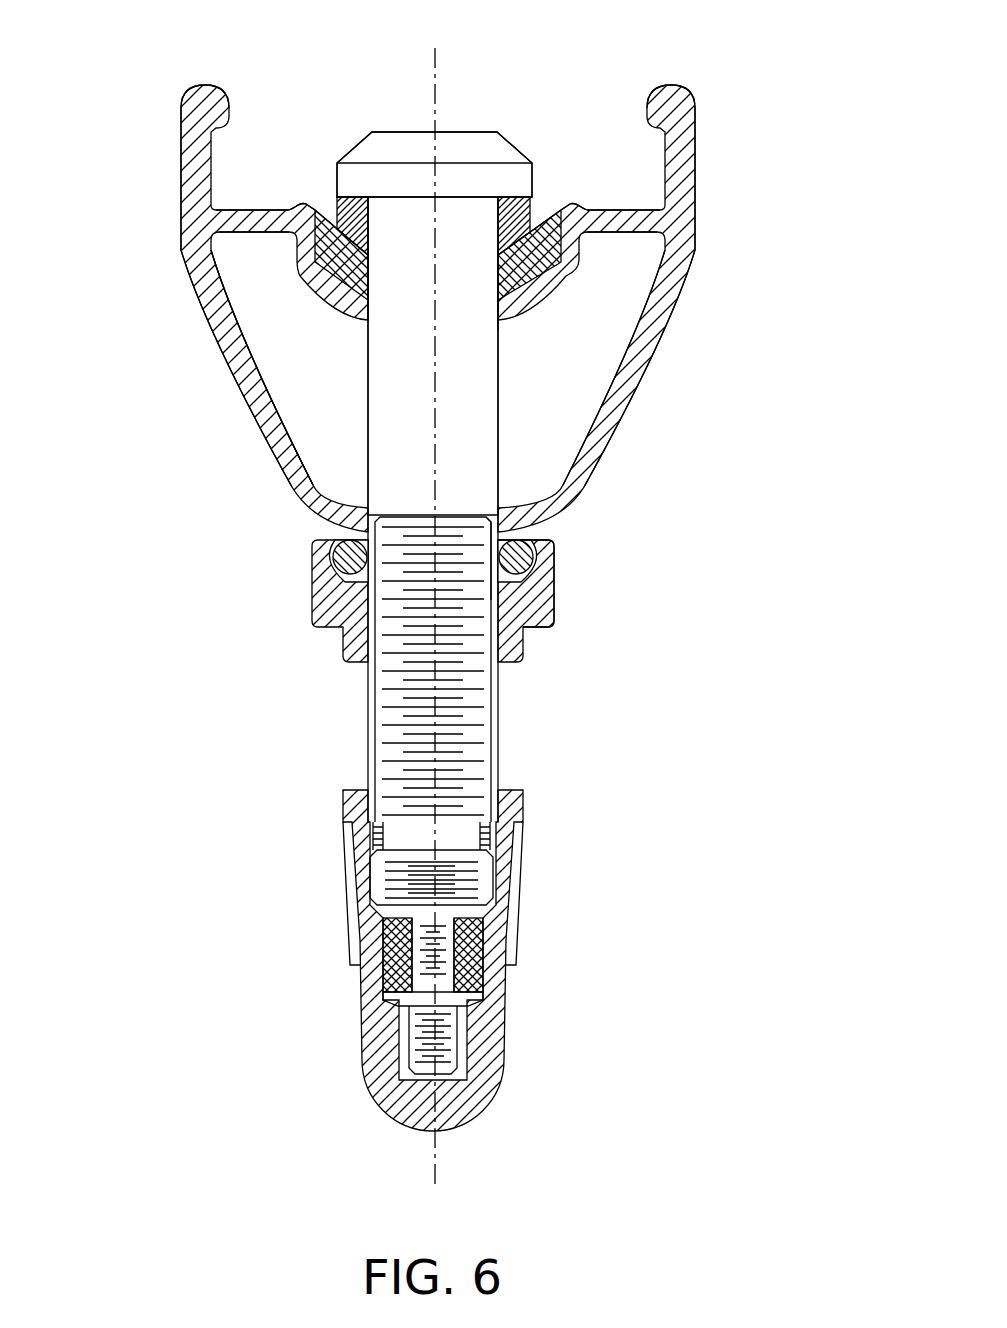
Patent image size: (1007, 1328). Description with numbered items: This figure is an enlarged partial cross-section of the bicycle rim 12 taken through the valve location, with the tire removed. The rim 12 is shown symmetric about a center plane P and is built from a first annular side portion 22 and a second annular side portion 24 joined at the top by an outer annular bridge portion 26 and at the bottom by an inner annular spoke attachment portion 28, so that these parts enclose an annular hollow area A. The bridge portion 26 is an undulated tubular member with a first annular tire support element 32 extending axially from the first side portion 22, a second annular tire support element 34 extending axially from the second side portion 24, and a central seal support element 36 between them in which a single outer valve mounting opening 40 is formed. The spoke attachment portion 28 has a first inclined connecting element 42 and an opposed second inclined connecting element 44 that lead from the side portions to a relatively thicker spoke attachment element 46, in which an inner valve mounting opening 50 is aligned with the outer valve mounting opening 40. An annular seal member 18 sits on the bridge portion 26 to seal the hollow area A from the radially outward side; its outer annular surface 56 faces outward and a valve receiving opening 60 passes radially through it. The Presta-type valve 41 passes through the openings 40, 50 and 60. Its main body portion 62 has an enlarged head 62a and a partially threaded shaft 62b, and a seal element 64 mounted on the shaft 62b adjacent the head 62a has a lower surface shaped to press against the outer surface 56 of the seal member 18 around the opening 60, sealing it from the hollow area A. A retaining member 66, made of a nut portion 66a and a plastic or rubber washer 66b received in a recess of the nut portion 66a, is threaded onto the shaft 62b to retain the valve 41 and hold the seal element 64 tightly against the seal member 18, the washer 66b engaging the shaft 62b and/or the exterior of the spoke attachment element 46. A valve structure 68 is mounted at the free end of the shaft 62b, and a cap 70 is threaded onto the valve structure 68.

The bicycle rim 12 is at (707, 100).
The annular seal member 18 is at (550, 206).
The first annular side portion 22 is at (697, 178).
The second annular side portion 24 is at (180, 186).
The outer annular bridge portion 26 is at (568, 298).
The inner annular spoke attachment portion 28 is at (612, 437).
The first annular tire support element 32 is at (638, 216).
The second annular tire support element 34 is at (261, 218).
The annular central seal support element 36 is at (333, 292).
The outer valve mounting opening 40 is at (496, 292).
The valve 41 is at (511, 770).
The first annular inclined connecting element 42 is at (623, 390).
The second annular inclined connecting element 44 is at (280, 445).
The spoke attachment element 46 is at (345, 521).
The inner valve mounting opening 50 is at (488, 507).
The outer annular surface 56 is at (325, 205).
The valve receiving opening 60 is at (498, 283).
The main body portion 62 is at (498, 126).
The enlarged head 62a is at (475, 147).
The partially threaded shaft 62b is at (393, 438).
The seal element 64 is at (354, 194).
The retaining member 66 is at (559, 594).
The nut portion 66a is at (540, 576).
The washer 66b is at (533, 525).
The valve structure 68 is at (493, 865).
The cap 70 is at (506, 1003).
The annular hollow area A is at (280, 368).
The center plane P is at (433, 371).